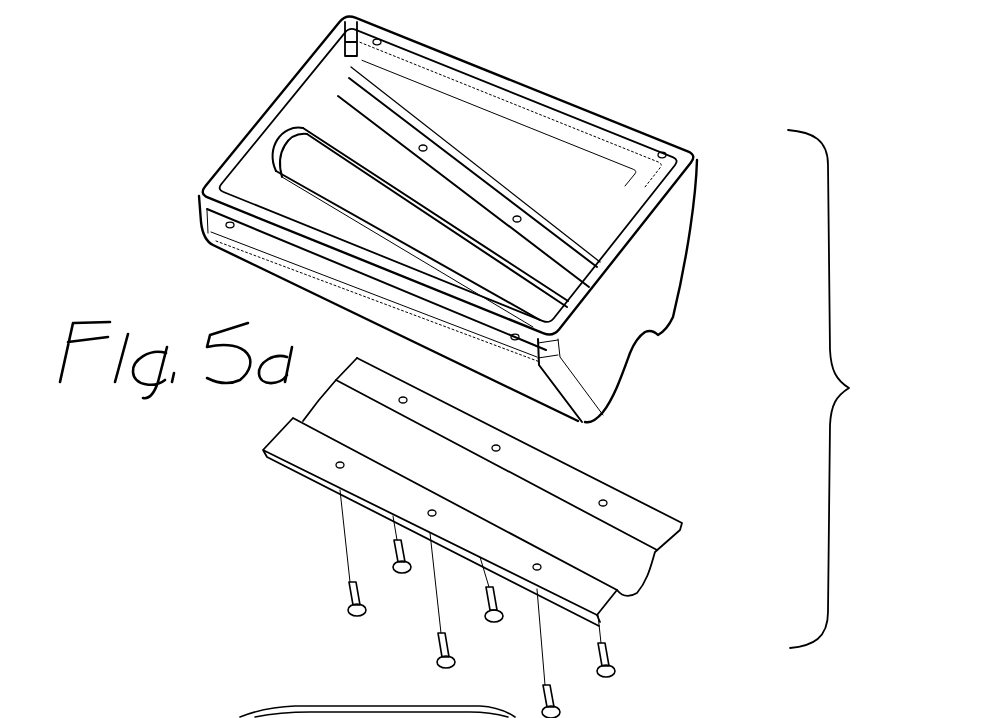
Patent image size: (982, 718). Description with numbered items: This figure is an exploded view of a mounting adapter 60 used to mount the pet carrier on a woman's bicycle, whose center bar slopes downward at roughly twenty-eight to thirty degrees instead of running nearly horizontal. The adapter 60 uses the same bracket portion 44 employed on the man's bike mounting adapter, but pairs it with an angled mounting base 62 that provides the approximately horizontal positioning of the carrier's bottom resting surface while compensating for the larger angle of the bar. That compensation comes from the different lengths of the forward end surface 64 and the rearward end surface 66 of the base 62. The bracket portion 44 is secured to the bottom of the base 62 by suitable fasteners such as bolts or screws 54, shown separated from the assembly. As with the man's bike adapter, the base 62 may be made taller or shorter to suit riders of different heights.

The mounting adapter 60 is at (542, 359).
The angled mounting base 62 is at (568, 170).
The forward end surface 64 is at (227, 160).
The rearward end surface 66 is at (653, 279).
The bracket portion 44 is at (643, 590).
The bolts or screws 54 is at (440, 648).